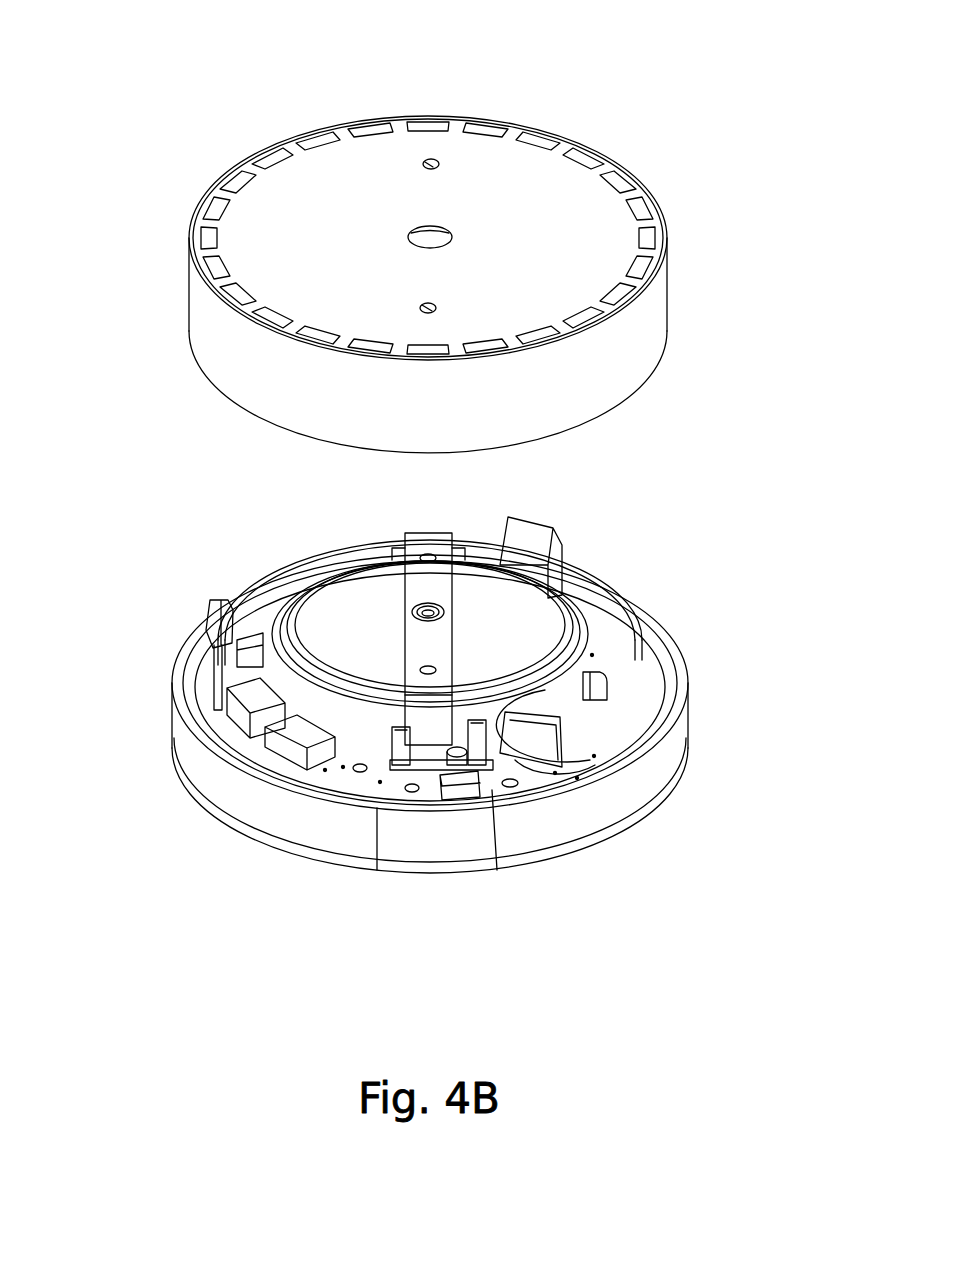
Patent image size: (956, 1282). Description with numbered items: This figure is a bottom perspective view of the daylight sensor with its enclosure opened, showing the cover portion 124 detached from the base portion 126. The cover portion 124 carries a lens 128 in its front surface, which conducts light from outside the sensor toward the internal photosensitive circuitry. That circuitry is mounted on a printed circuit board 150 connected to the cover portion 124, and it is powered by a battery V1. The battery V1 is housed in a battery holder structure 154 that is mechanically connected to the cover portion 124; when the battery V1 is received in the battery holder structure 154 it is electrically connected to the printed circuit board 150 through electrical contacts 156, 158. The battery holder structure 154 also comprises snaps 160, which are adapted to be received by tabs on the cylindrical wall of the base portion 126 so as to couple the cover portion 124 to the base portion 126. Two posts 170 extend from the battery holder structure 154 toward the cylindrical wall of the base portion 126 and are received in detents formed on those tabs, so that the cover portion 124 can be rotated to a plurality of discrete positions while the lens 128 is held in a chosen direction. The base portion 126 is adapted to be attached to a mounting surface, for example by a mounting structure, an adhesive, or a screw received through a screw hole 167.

The cover portion 124 is at (643, 777).
The base portion 126 is at (230, 353).
The lens 128 is at (228, 777).
The printed circuit board 150 is at (615, 643).
The battery holder structure 154 is at (354, 718).
The electrical contact 156 is at (605, 684).
The electrical contact 158 is at (428, 590).
The snaps 160 is at (535, 548).
The screw hole 167 is at (438, 164).
The posts 170 is at (397, 762).
The battery V1 is at (363, 648).